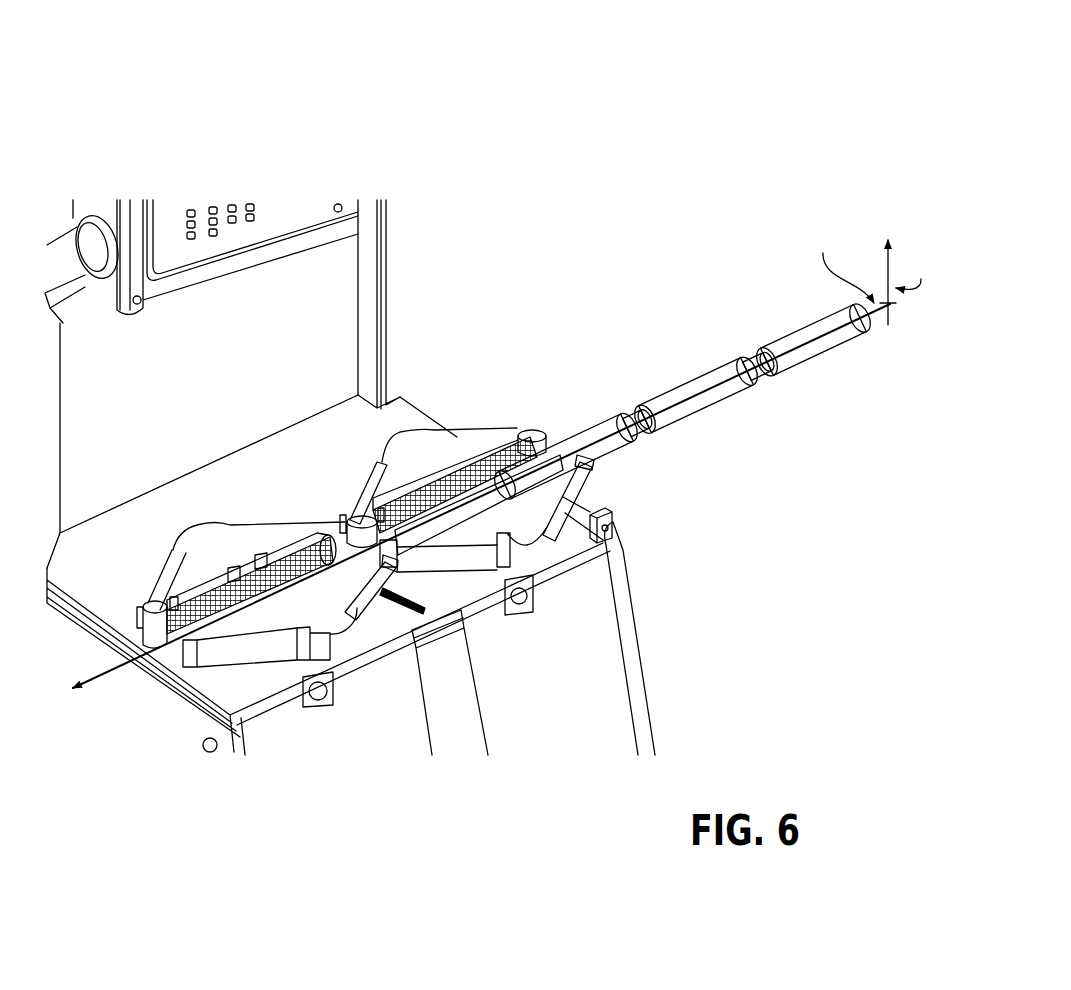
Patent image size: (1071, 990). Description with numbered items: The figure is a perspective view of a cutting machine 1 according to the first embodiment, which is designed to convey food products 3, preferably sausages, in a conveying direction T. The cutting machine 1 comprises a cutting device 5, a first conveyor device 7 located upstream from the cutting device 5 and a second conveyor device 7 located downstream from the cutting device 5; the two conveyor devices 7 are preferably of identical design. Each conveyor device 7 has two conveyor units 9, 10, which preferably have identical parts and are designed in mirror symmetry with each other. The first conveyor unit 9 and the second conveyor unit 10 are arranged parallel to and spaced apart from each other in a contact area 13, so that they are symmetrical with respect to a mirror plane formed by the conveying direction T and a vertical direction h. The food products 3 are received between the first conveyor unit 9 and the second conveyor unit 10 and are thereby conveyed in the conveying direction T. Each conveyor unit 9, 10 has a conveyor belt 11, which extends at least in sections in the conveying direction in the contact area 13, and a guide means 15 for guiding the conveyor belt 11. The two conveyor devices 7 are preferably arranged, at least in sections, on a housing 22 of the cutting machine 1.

The cutting machine 1 is at (453, 122).
The food products 3 is at (675, 392).
The cutting device 5 is at (330, 501).
The conveyor device 7 is at (512, 390).
The first conveyor unit 9 is at (398, 478).
The second conveyor unit 10 is at (565, 538).
The conveyor belt 11 is at (545, 432).
The contact area 13 is at (478, 510).
The guide means 15 is at (407, 440).
The housing 22 is at (330, 742).